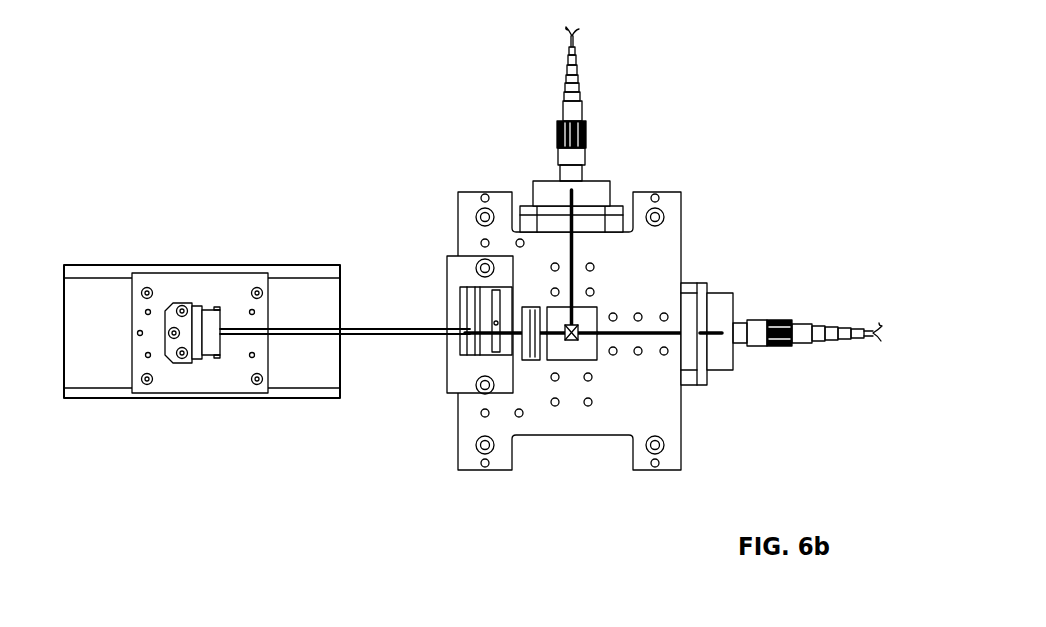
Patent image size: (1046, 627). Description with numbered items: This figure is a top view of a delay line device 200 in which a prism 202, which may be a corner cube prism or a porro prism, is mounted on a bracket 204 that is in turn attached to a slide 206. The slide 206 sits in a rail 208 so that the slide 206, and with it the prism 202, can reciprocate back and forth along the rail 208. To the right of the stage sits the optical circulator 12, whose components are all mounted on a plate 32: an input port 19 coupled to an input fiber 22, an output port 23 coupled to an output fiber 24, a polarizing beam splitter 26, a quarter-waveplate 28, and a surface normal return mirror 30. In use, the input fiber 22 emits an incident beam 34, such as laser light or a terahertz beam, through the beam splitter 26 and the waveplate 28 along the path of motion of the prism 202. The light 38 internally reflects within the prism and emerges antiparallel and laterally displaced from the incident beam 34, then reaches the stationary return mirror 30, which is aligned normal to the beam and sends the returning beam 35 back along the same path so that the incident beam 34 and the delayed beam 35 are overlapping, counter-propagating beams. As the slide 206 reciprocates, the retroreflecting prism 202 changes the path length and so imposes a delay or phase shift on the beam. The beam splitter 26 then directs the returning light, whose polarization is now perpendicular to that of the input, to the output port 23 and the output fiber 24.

The optical circulator 12 is at (551, 272).
The input port 19 is at (702, 283).
The input fiber 22 is at (848, 325).
The output port 23 is at (615, 207).
The output fiber 24 is at (573, 57).
The polarizing beam splitter 26 is at (576, 342).
The quarter-waveplate 28 is at (536, 357).
The surface normal return mirror 30 is at (470, 310).
The plate 32 is at (475, 472).
The incident beam 34 is at (417, 336).
The returning beam 35 is at (573, 246).
The emerging beam 38 is at (403, 327).
The delay line device 200 is at (202, 322).
The prism 202 is at (215, 318).
The bracket 204 is at (198, 320).
The slide 206 is at (220, 380).
The rail 208 is at (102, 397).